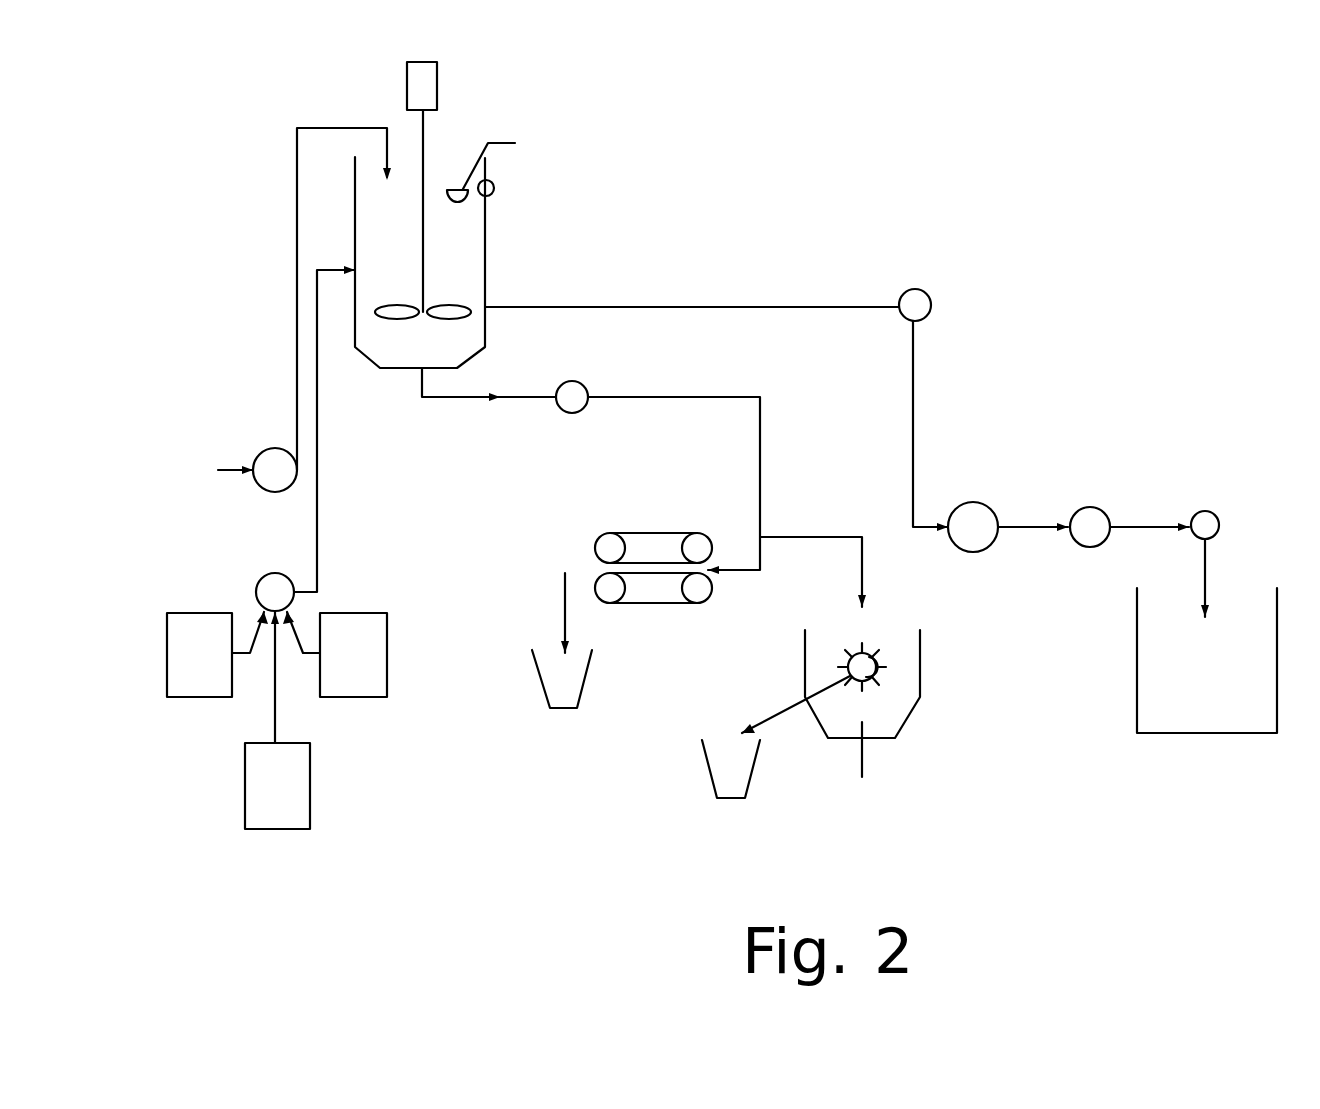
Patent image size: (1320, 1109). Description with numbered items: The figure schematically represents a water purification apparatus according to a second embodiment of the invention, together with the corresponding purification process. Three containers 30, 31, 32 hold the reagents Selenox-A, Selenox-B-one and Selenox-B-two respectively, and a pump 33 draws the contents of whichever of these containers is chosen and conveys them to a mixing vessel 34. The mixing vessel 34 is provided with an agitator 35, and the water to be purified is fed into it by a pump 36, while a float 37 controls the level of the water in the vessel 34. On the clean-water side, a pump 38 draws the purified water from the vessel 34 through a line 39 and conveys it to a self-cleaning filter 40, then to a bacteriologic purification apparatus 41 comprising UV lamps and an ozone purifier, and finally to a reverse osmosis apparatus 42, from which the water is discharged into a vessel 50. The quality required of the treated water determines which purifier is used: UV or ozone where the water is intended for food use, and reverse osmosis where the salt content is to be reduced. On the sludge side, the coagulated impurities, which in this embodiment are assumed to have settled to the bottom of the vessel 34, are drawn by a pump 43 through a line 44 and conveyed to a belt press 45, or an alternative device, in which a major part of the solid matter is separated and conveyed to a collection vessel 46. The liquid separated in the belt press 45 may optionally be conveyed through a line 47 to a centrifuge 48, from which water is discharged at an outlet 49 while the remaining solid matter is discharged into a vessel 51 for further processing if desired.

The container of Selenox-A 30 is at (295, 805).
The container of Selenox-B-1 31 is at (182, 665).
The container of Selenox-B-2 32 is at (365, 665).
The pump 33 is at (275, 585).
The mixing vessel 34 is at (385, 247).
The agitator 35 is at (423, 150).
The pump 36 is at (272, 455).
The float 37 is at (468, 199).
The pump 38 is at (918, 297).
The line 39 is at (668, 305).
The self-cleaning filter 40 is at (975, 515).
The bacteriologic purification apparatus 41 is at (1095, 515).
The reverse osmosis apparatus 42 is at (1205, 520).
The pump 43 is at (577, 402).
The line 44 is at (460, 400).
The belt press 45 is at (664, 608).
The collection vessel 46 is at (560, 692).
The line 47 is at (808, 535).
The centrifuge 48 is at (868, 661).
The water discharge 49 is at (862, 760).
The vessel 50 is at (1215, 712).
The vessel 51 is at (730, 785).